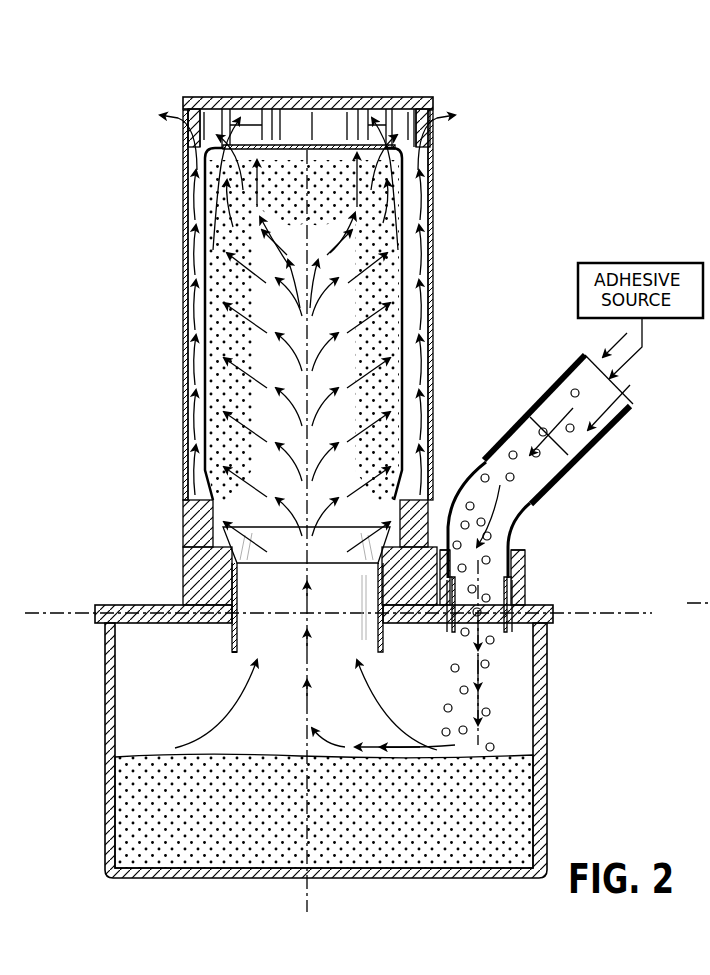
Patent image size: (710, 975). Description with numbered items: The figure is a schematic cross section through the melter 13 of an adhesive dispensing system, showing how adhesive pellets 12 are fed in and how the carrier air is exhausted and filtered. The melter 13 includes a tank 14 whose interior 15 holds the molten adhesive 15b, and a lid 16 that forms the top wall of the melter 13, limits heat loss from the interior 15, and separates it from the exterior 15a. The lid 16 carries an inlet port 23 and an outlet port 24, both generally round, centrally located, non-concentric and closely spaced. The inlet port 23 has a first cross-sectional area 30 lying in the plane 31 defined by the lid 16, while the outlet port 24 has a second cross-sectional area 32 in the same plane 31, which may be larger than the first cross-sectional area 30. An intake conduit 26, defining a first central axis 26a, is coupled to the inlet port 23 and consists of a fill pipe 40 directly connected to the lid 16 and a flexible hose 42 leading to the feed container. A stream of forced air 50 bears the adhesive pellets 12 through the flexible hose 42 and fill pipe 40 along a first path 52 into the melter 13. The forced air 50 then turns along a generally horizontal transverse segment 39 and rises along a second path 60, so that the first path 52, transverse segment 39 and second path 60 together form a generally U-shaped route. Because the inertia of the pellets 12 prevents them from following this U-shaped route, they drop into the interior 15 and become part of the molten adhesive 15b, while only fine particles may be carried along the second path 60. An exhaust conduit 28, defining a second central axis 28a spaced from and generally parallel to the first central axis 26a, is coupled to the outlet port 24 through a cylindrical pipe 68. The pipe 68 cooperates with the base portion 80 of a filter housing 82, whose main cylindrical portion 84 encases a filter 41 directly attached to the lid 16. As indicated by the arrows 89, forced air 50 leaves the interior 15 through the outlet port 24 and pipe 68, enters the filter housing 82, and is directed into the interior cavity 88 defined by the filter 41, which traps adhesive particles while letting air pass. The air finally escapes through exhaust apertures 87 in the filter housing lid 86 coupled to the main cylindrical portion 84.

The adhesive pellets 12 is at (460, 690).
The melter 13 is at (570, 742).
The tank 14 is at (540, 715).
The interior 15 is at (344, 704).
The exterior 15a is at (126, 467).
The molten adhesive 15b is at (190, 836).
The lid 16 is at (97, 608).
The inlet port 23 is at (553, 612).
The outlet port 24 is at (237, 612).
The intake conduit 26 is at (545, 515).
The first central axis 26a is at (478, 795).
The exhaust conduit 28 is at (460, 252).
The second central axis 28a is at (305, 800).
The first cross-sectional area 30 is at (495, 620).
The plane 31 is at (55, 613).
The second cross-sectional area 32 is at (282, 617).
The transverse segment 39 is at (380, 752).
The fill pipe 40 is at (526, 592).
The filter 41 is at (415, 175).
The flexible hose 42 is at (527, 414).
The forced air 50 is at (220, 725).
The first path 52 is at (475, 660).
The second path 60 is at (307, 707).
The pipe 68 is at (232, 650).
The base portion 80 is at (183, 562).
The filter housing 82 is at (183, 235).
The main cylindrical portion 84 is at (434, 330).
The filter housing lid 86 is at (348, 97).
The exhaust apertures 87 is at (268, 109).
The interior cavity 88 is at (350, 372).
The arrows 89 is at (185, 126).